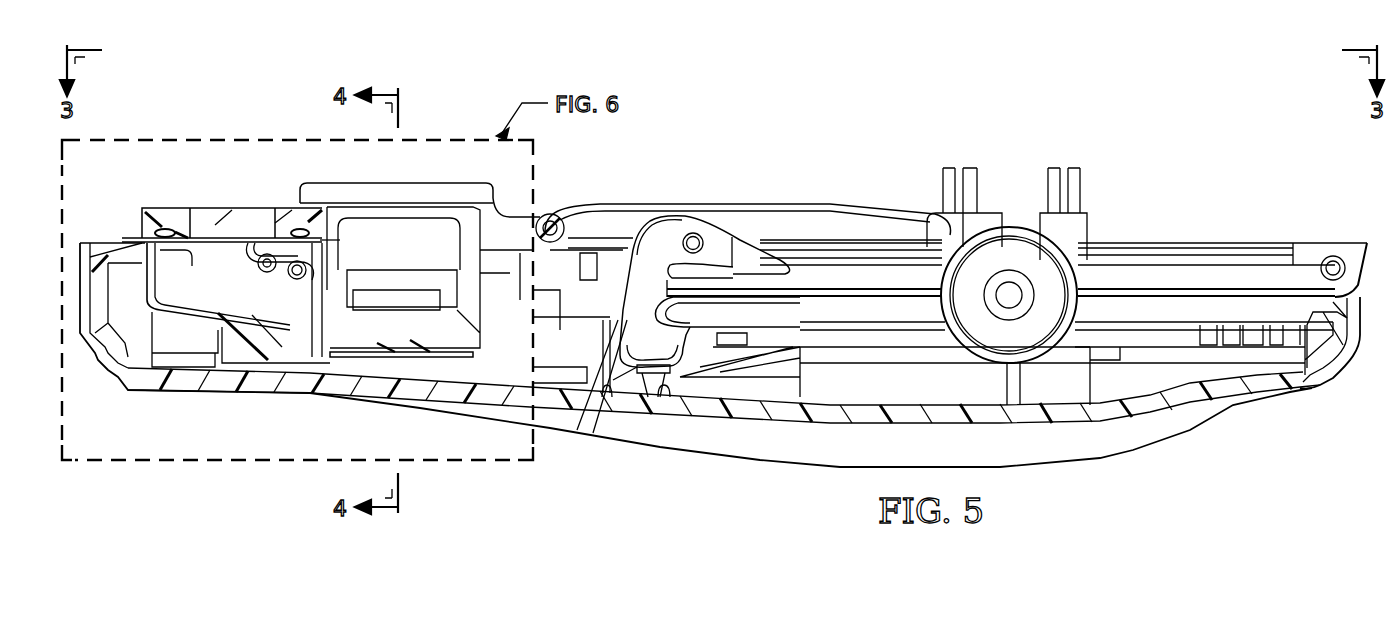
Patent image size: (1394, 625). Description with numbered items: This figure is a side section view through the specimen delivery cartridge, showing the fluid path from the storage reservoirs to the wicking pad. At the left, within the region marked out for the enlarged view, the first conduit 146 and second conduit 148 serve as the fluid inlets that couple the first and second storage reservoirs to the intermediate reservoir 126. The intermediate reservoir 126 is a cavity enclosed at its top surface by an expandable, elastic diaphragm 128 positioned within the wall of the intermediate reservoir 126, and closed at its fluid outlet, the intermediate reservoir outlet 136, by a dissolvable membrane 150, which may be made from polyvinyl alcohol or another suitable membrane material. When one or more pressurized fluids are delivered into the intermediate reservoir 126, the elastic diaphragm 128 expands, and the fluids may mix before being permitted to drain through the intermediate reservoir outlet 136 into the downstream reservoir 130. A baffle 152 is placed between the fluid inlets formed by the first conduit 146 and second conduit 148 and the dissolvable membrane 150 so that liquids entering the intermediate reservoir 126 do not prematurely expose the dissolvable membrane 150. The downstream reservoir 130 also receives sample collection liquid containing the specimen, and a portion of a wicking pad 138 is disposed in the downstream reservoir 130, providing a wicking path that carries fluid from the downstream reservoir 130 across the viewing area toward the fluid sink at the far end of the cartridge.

The intermediate reservoir 126 is at (250, 362).
The expandable, elastic diaphragm 128 is at (230, 233).
The downstream reservoir 130 is at (470, 343).
The intermediate reservoir outlet 136 is at (350, 330).
The wicking pad 138 is at (427, 280).
The first conduit 146 is at (248, 250).
The second conduit 148 is at (320, 240).
The dissolvable membrane 150 is at (253, 313).
The baffle 152 is at (310, 295).